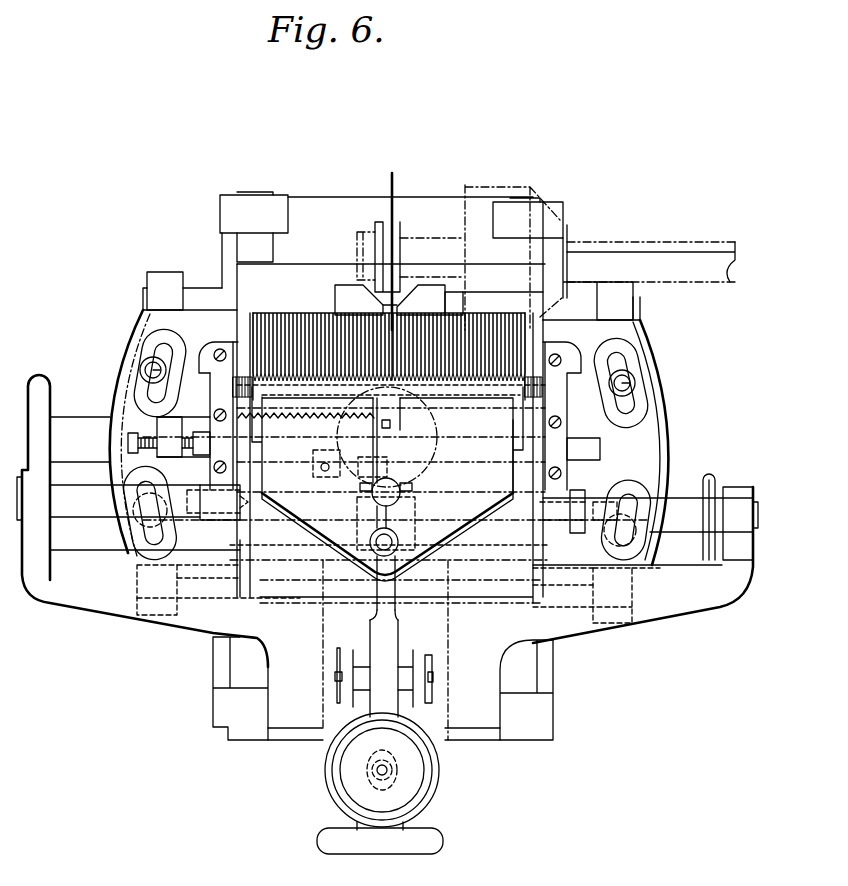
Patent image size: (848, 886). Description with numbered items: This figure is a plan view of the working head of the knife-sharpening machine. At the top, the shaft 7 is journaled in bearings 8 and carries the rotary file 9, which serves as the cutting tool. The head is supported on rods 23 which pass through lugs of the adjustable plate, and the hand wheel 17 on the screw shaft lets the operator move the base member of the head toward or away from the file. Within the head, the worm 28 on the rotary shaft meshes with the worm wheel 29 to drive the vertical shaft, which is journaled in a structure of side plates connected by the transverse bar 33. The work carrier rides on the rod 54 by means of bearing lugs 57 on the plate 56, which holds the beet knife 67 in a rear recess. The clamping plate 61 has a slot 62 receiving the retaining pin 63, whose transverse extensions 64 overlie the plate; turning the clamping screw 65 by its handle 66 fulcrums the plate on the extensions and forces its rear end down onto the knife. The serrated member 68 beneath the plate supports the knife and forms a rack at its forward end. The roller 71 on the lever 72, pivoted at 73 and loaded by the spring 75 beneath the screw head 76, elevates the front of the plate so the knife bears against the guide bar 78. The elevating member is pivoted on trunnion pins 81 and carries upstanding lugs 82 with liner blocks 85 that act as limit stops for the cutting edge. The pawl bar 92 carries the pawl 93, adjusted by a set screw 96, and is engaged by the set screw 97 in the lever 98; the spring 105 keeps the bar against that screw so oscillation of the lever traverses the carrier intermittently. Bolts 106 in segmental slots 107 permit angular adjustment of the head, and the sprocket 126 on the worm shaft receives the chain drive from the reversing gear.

The shaft 7 is at (424, 240).
The bearing 8 is at (497, 195).
The rotary file 9 is at (394, 197).
The hand wheel 17 is at (443, 843).
The rod 23 is at (200, 600).
The worm 28 is at (360, 513).
The worm wheel 29 is at (433, 430).
The transverse bar 33 is at (661, 443).
The rod 54 is at (70, 497).
The plate 56 is at (247, 585).
The bearing lug 57 is at (227, 551).
The clamping plate 61 is at (323, 530).
The slot 62 is at (397, 412).
The retaining pin 63 is at (398, 482).
The transverse extension 64 is at (413, 490).
The clamping screw 65 is at (394, 530).
The handle 66 is at (398, 611).
The beet knife 67 is at (277, 292).
The member 68 is at (238, 390).
The roller 71 is at (373, 587).
The lever 72 is at (399, 648).
The pivot 73 is at (432, 677).
The spring 75 is at (388, 773).
The head 76 is at (439, 772).
The guide bar 78 is at (238, 353).
The trunnion pin 81 is at (207, 522).
The lug 82 is at (335, 298).
The liner block 85 is at (347, 303).
The pawl bar 92 is at (600, 448).
The pawl 93 is at (398, 461).
The set screw 96 is at (313, 467).
The set screw 97 is at (133, 445).
The lever 98 is at (165, 437).
The spring 105 is at (278, 415).
The bolt 106 is at (150, 370).
The segmental slot 107 is at (633, 408).
The sprocket 126 is at (712, 473).